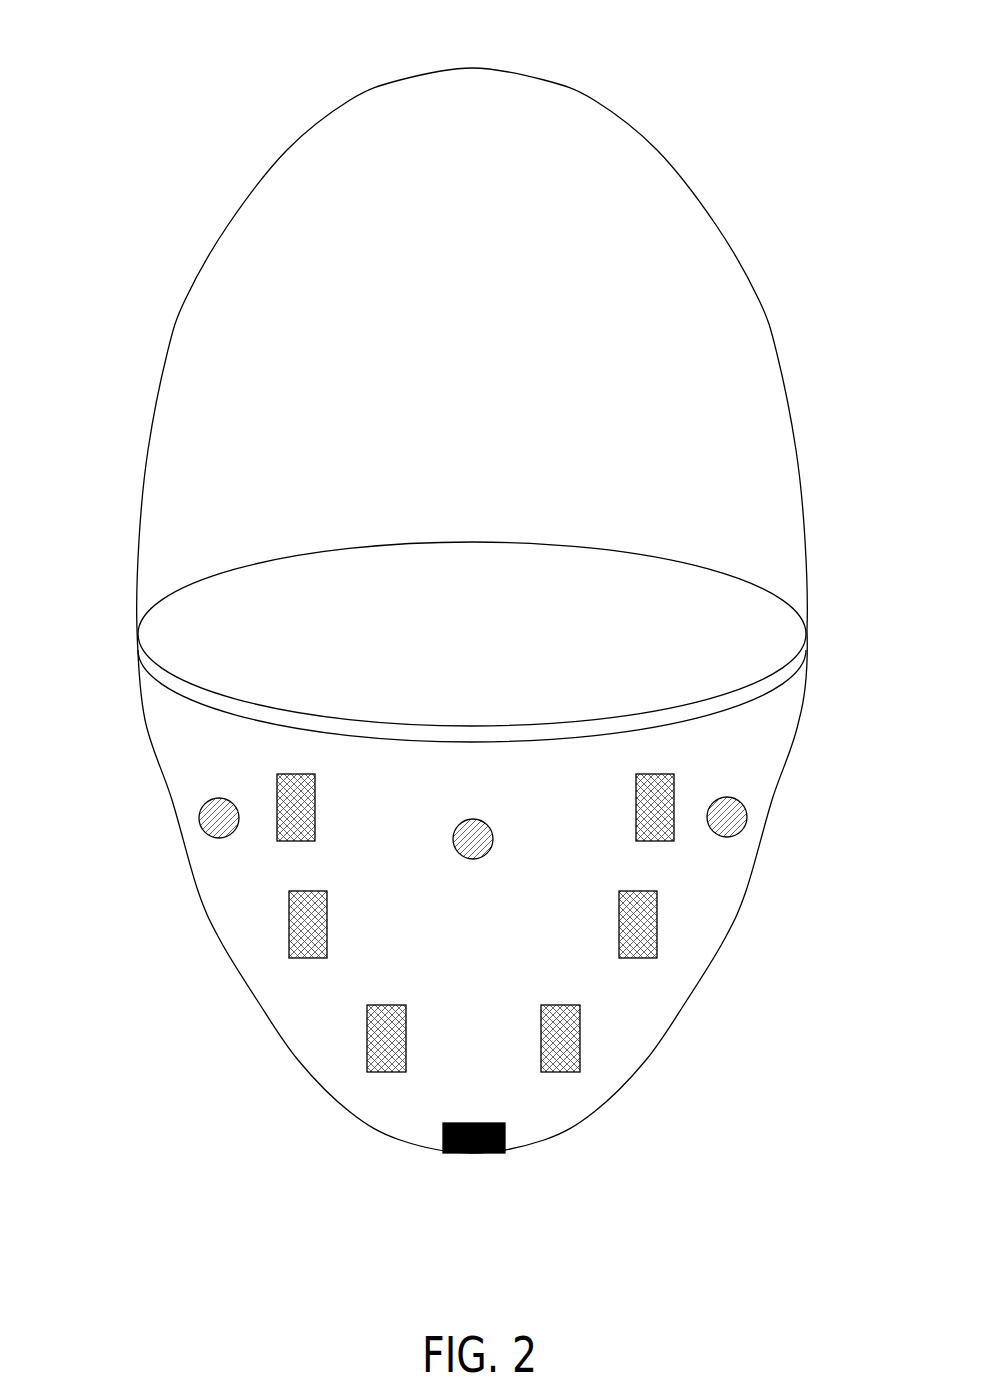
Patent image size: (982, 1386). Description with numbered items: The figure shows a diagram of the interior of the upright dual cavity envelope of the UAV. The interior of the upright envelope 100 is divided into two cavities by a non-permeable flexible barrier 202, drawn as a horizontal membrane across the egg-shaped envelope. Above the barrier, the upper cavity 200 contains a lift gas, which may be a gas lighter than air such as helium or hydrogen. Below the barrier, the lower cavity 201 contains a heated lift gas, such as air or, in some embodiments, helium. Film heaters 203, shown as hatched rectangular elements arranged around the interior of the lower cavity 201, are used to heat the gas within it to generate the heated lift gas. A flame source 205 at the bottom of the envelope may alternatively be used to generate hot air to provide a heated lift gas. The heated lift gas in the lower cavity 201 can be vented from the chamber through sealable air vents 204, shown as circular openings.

The upright envelope 100 is at (121, 110).
The upper cavity 200 is at (188, 354).
The lower cavity 201 is at (730, 891).
The non-permeable flexible barrier 202 is at (575, 564).
The film heaters 203 is at (560, 1010).
The sealable air vents 204 is at (229, 798).
The flame source 205 is at (483, 1154).